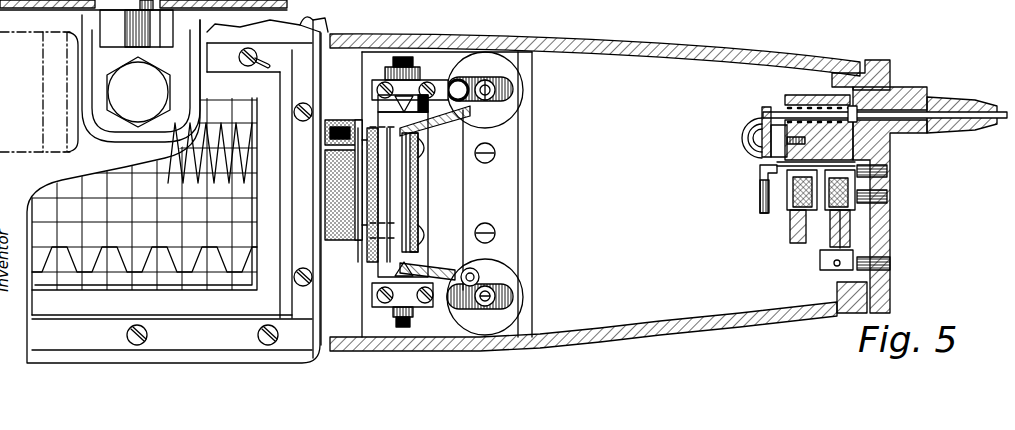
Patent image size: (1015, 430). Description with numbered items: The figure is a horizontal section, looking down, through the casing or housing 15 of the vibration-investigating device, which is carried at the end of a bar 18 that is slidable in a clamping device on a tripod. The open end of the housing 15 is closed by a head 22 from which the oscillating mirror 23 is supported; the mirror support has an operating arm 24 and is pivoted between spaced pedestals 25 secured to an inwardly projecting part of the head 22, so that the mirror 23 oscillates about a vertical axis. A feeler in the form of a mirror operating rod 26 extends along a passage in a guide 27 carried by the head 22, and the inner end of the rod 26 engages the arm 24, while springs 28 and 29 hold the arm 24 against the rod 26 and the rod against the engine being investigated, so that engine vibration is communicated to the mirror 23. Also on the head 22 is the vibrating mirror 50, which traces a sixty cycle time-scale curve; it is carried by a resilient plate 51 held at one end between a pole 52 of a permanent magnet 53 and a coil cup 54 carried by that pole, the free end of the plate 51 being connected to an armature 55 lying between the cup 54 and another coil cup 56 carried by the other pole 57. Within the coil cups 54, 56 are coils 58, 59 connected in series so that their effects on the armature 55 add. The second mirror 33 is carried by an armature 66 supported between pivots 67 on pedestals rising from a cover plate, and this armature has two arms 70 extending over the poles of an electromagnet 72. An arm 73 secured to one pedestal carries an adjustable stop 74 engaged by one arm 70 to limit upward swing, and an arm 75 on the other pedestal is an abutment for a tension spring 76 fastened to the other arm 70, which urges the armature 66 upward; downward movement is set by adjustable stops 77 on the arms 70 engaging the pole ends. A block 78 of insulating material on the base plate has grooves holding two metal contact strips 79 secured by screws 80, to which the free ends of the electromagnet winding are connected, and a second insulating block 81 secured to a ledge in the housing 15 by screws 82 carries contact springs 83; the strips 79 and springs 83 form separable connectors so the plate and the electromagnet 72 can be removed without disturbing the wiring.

The casing or housing 15 is at (745, 318).
The bar 18 is at (23, 115).
The head 22 is at (888, 222).
The oscillating mirror 23 is at (746, 136).
The operating arm 24 is at (765, 109).
The pedestals 25 is at (775, 130).
The mirror operating rod 26 is at (893, 111).
The guide 27 is at (935, 100).
The spring 28 is at (752, 144).
The spring 29 is at (853, 107).
The angularly movable mirror 33 is at (412, 180).
The vibrating mirror 50 is at (762, 172).
The resilient plate 51 is at (777, 217).
The pole 52 is at (790, 230).
The permanent magnet 53 is at (818, 96).
The coil cup 54 is at (790, 198).
The armature 55 is at (820, 228).
The coil cup 56 is at (888, 202).
The pole 57 is at (851, 230).
The coil 58 is at (762, 188).
The coil 59 is at (888, 178).
The armature 66 is at (395, 193).
The pivots 67 is at (400, 60).
The arms 70 is at (485, 80).
The electromagnet 72 is at (493, 62).
The arm 73 is at (436, 84).
The adjustable stop 74 is at (452, 81).
The arm 75 is at (445, 270).
The tension spring 76 is at (478, 272).
The adjustable stops 77 is at (504, 92).
The block of insulating material 78 is at (378, 96).
The contact strips 79 is at (378, 150).
The screws 80 is at (426, 143).
The block of insulating material 81 is at (366, 250).
The screws 82 is at (331, 30).
The contact springs 83 is at (368, 160).